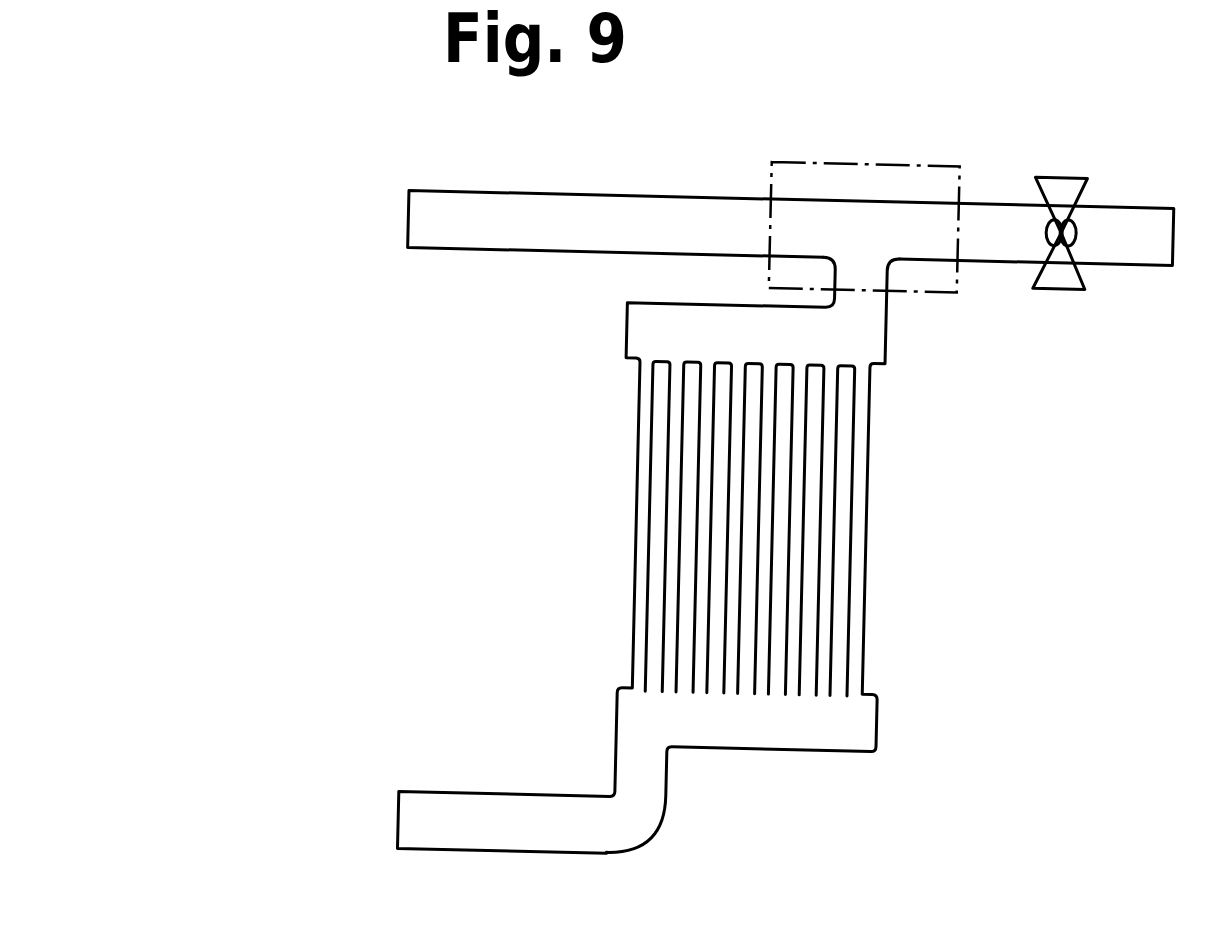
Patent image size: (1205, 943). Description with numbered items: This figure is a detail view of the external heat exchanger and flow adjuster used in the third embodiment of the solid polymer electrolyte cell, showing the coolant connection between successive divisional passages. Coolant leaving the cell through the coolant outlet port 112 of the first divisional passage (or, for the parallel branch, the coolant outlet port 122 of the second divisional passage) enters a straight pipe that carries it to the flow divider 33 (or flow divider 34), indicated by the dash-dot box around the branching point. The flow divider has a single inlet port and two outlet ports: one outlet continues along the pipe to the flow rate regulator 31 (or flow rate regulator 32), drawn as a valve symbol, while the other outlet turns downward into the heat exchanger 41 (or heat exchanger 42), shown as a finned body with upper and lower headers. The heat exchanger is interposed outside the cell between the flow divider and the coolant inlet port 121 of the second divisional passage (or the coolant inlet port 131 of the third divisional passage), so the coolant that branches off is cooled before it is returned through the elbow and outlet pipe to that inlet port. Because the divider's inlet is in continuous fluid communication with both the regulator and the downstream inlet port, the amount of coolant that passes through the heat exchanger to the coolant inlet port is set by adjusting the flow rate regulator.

The coolant outlet port 112 is at (703, 220).
The coolant outlet port 122 is at (392, 226).
The flow rate regulator 31 is at (1090, 300).
The flow rate regulator 32 is at (1057, 313).
The flow divider 33 is at (868, 173).
The flow divider 34 is at (827, 172).
The heat exchanger 41 is at (863, 556).
The heat exchanger 42 is at (903, 563).
The coolant inlet port 121 is at (409, 814).
The coolant inlet port 131 is at (397, 822).